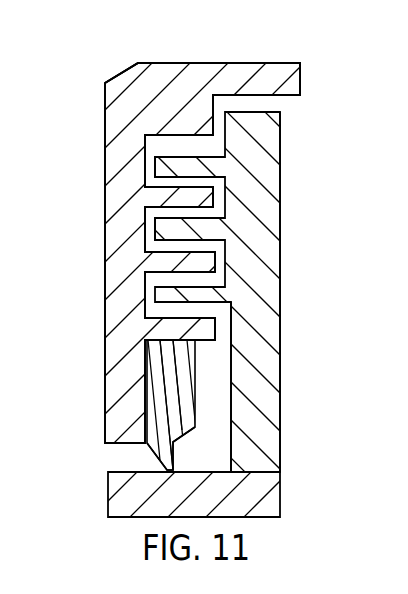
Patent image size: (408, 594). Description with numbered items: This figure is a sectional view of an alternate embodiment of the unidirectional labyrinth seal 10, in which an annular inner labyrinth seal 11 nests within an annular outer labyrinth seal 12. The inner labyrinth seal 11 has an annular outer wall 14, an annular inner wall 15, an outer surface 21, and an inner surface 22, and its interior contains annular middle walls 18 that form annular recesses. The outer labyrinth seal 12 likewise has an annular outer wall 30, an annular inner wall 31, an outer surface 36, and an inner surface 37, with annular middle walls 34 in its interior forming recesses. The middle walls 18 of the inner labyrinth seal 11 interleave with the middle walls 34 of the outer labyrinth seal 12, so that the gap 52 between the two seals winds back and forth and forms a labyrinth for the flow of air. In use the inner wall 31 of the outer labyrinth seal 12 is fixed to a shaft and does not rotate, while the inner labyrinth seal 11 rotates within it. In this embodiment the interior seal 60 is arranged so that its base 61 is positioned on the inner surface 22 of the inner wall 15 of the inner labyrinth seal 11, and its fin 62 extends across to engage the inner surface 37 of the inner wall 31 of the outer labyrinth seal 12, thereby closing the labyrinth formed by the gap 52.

The unidirectional labyrinth seal 10 is at (86, 252).
The inner labyrinth seal 11 is at (115, 71).
The outer labyrinth seal 12 is at (284, 116).
The outer wall 14 is at (268, 75).
The inner wall 15 is at (180, 337).
The middle walls 18 is at (177, 198).
The outer surface 21 is at (103, 283).
The inner surface 22 is at (143, 382).
The outer wall 30 is at (187, 170).
The inner wall 31 is at (227, 503).
The middle walls 34 is at (187, 232).
The outer surface 36 is at (284, 202).
The inner surface 37 is at (158, 475).
The gap 52 is at (200, 312).
The interior seal 60 is at (172, 410).
The base 61 is at (180, 355).
The fin 62 is at (178, 457).